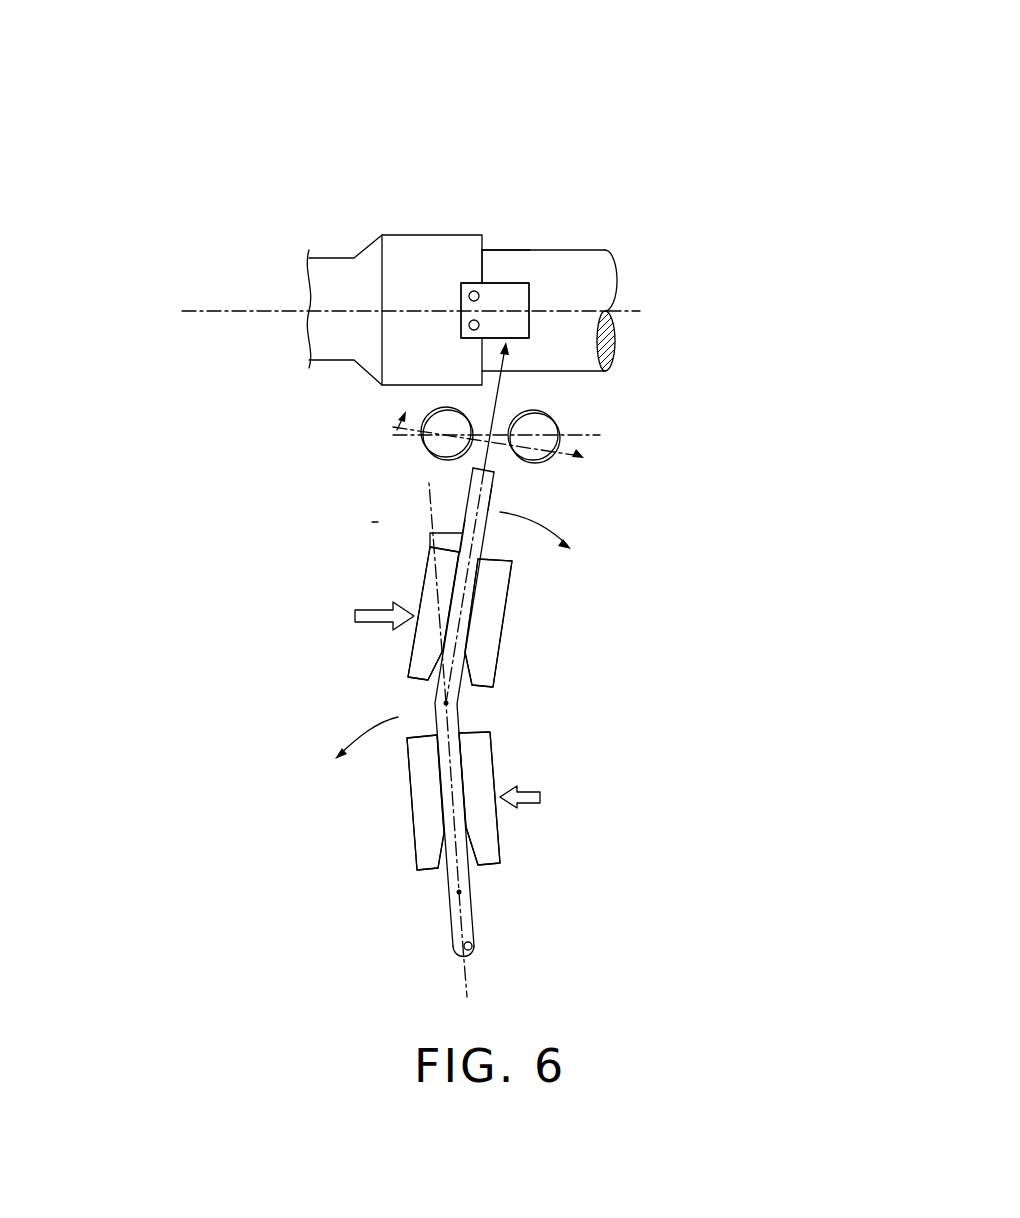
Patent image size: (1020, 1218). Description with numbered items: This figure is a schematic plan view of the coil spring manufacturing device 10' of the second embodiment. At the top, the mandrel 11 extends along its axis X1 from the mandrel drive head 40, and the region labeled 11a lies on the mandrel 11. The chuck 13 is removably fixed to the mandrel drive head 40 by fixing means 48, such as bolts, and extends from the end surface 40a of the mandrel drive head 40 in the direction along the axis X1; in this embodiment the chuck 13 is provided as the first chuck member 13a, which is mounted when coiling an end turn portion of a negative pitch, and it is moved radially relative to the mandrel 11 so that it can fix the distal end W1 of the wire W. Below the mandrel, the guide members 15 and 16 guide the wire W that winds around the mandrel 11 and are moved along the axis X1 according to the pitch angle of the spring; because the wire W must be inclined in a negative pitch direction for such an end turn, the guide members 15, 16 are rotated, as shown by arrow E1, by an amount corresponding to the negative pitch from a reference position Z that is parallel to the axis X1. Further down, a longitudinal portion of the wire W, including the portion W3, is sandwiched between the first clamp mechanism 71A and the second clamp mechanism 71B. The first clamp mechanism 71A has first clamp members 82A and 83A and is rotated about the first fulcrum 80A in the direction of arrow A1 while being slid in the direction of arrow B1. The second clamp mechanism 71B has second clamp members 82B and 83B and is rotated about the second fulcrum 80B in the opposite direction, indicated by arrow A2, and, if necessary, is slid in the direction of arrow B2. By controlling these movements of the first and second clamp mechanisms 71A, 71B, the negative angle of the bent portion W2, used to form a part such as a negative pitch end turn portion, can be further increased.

The coil spring manufacturing device 10' is at (628, 48).
The axis of the mandrel X1 is at (212, 307).
The mandrel drive head 40 is at (422, 235).
The end surface of the mandrel drive head 40a is at (486, 262).
The mandrel 11 is at (588, 249).
The peripheral surface of shaft 11a is at (503, 249).
The chuck 13 is at (534, 274).
The first chuck member 13a is at (515, 300).
The fixing means 48 is at (468, 323).
The guide member 15 is at (425, 456).
The guide member 16 is at (548, 412).
The reference position Z is at (582, 435).
The arrow indicating rotation of the guide members E1 is at (393, 428).
The wire W is at (470, 928).
The distal end of the wire W1 is at (492, 470).
The bent portion of the wire W2 is at (478, 582).
The third wire portion W3 is at (482, 540).
The arrow indicating rotation direction of the first clamp mechanism A1 is at (548, 525).
The arrow indicating rotation direction of the second clamp mechanism A2 is at (363, 733).
The arrow indicating sliding direction of the first clamp mechanism B1 is at (373, 606).
The arrow indicating sliding direction of the second clamp mechanism B2 is at (527, 790).
The first clamp mechanism 71A is at (545, 598).
The first clamp member 82A is at (427, 645).
The first clamp member 83A is at (483, 640).
The first fulcrum 80A is at (450, 703).
The second clamp mechanism 71B is at (567, 767).
The second clamp member 82B is at (418, 803).
The second clamp member 83B is at (490, 833).
The second fulcrum 80B is at (462, 892).